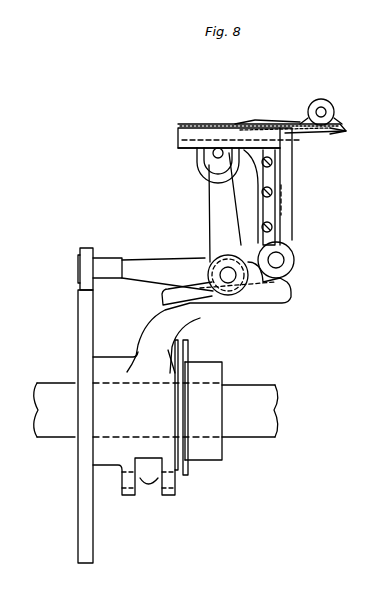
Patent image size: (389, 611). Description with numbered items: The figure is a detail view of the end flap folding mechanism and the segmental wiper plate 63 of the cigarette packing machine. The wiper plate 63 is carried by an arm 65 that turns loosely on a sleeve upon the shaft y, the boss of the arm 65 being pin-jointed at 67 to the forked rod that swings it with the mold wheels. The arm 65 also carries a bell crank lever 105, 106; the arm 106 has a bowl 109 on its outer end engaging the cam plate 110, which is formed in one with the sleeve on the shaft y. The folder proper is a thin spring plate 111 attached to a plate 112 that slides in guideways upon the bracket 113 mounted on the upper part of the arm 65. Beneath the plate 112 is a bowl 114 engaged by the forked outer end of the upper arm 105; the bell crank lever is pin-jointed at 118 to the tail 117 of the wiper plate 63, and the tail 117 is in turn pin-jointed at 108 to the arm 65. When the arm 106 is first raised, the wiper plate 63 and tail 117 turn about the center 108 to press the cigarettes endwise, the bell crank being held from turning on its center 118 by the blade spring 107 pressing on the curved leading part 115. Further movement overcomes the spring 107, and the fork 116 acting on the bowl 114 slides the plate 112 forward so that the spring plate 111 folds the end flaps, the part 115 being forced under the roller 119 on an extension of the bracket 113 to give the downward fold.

The segmental wiper plate 63 is at (290, 195).
The arm 65 is at (219, 305).
The pin joint 67 is at (134, 483).
The upper arm of bell crank lever 105 is at (212, 208).
The arm of bell crank lever 106 is at (149, 268).
The blade spring 107 is at (250, 124).
The pin joint center 108 is at (282, 260).
The bowl 109 is at (89, 248).
The cam plate 110 is at (78, 307).
The thin spring plate 111 is at (346, 134).
The sliding plate 112 is at (178, 130).
The bracket 113 is at (185, 147).
The bowl 114 is at (205, 178).
The curved leading part 115 is at (273, 127).
The fork 116 is at (200, 158).
The tail of wiper plate 117 is at (160, 296).
The pin joint center 118 is at (222, 271).
The roller 119 is at (330, 110).
The shaft y is at (72, 407).